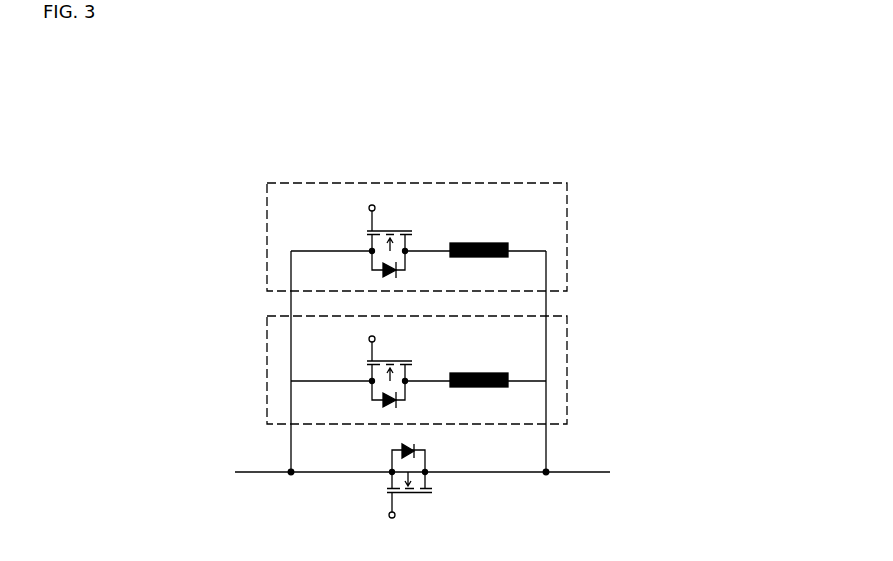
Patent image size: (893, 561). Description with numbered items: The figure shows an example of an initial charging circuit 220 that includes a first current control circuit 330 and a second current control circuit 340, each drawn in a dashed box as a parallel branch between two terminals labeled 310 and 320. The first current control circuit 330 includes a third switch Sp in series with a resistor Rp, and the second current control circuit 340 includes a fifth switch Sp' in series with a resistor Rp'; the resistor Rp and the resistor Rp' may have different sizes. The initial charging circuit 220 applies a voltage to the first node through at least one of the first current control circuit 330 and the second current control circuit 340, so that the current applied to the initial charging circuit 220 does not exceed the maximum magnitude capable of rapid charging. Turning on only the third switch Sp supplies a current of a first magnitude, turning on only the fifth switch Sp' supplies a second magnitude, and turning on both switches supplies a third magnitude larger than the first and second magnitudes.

The initial charging circuit 220 is at (268, 102).
The first terminal 310 is at (290, 471).
The second terminal 320 is at (548, 470).
The first current control circuit 330 is at (567, 352).
The second current control circuit 340 is at (567, 203).